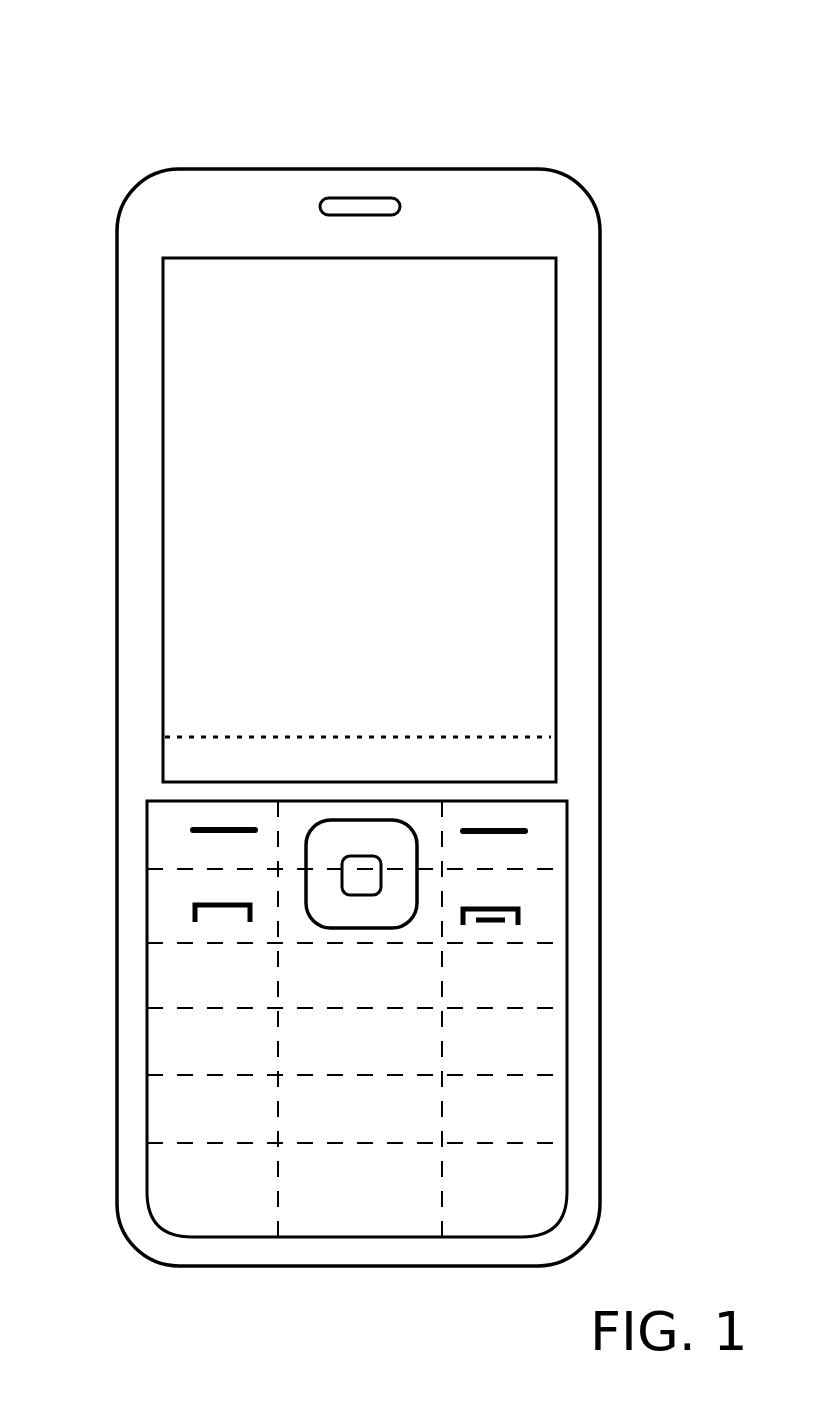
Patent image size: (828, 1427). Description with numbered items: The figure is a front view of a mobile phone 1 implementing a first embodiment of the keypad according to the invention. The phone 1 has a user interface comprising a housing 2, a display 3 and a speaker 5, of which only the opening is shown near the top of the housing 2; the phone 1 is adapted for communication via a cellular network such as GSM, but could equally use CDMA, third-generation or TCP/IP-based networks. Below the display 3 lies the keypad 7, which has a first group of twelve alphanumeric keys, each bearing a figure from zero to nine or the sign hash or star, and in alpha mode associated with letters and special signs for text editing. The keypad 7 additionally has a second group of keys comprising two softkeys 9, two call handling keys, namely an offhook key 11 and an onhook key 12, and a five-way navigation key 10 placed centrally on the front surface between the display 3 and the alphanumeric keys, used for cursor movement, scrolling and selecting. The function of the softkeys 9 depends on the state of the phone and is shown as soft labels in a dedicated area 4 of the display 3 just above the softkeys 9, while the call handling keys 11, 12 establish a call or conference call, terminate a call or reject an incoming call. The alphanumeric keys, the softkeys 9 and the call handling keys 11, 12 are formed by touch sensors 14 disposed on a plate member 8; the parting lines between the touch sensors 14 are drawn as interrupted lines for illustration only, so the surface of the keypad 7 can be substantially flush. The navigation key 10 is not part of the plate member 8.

The mobile phone 1 is at (580, 126).
The housing 2 is at (600, 288).
The display 3 is at (516, 509).
The dedicated area 4 is at (492, 750).
The speaker 5 is at (357, 198).
The keypad 7 is at (136, 1182).
The plate member 8 is at (568, 1110).
The softkeys 9 is at (182, 826).
The navigation key 10 is at (375, 830).
The offhook key 11 is at (188, 915).
The onhook key 12 is at (538, 916).
The touch sensors 14 is at (483, 1215).